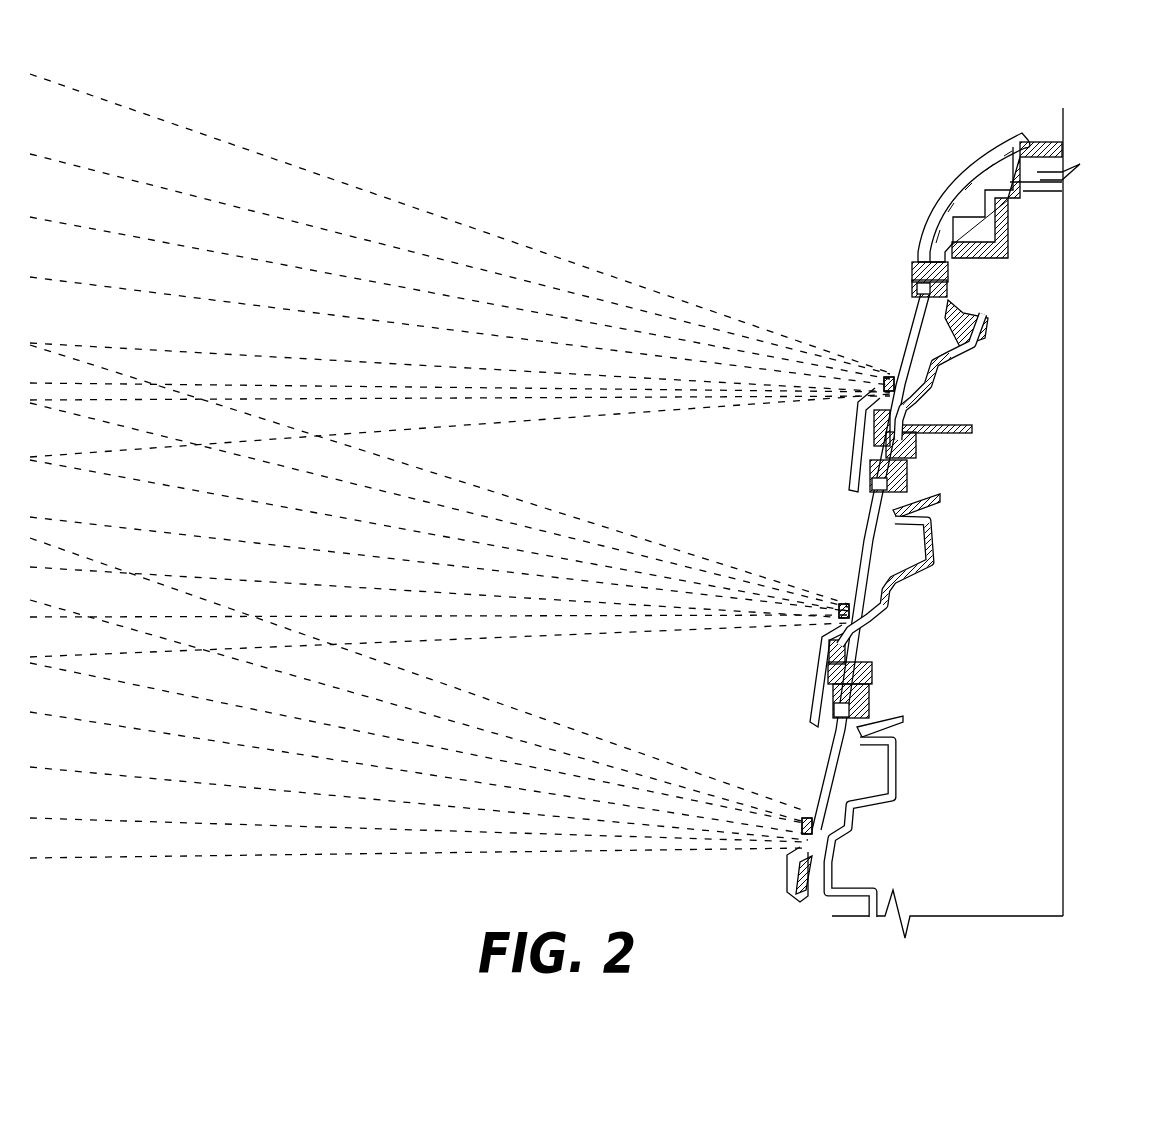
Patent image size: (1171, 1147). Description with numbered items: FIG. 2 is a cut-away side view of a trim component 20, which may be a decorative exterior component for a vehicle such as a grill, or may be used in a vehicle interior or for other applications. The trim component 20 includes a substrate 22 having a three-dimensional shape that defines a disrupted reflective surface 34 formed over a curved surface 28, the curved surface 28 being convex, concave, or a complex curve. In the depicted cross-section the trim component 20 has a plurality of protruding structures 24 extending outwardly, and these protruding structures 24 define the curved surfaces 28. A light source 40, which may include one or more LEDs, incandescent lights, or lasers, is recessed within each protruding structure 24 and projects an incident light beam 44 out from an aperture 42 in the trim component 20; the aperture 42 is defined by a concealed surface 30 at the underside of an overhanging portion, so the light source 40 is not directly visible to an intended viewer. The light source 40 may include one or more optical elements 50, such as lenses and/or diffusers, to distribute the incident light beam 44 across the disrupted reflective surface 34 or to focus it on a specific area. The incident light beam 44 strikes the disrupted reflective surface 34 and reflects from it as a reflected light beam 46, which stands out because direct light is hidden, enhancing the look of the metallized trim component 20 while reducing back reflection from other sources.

The trim component 20 is at (956, 180).
The substrate 22 is at (1010, 243).
The protruding structures 24 is at (852, 430).
The curved surface 28 is at (888, 380).
The concealed surface 30 is at (872, 485).
The disrupted reflective surface 34 is at (822, 564).
The light source 40 is at (912, 272).
The aperture 42 is at (965, 325).
The incident light beam 44 is at (935, 390).
The reflected light beam 46 is at (432, 240).
The optical elements 50 is at (948, 290).